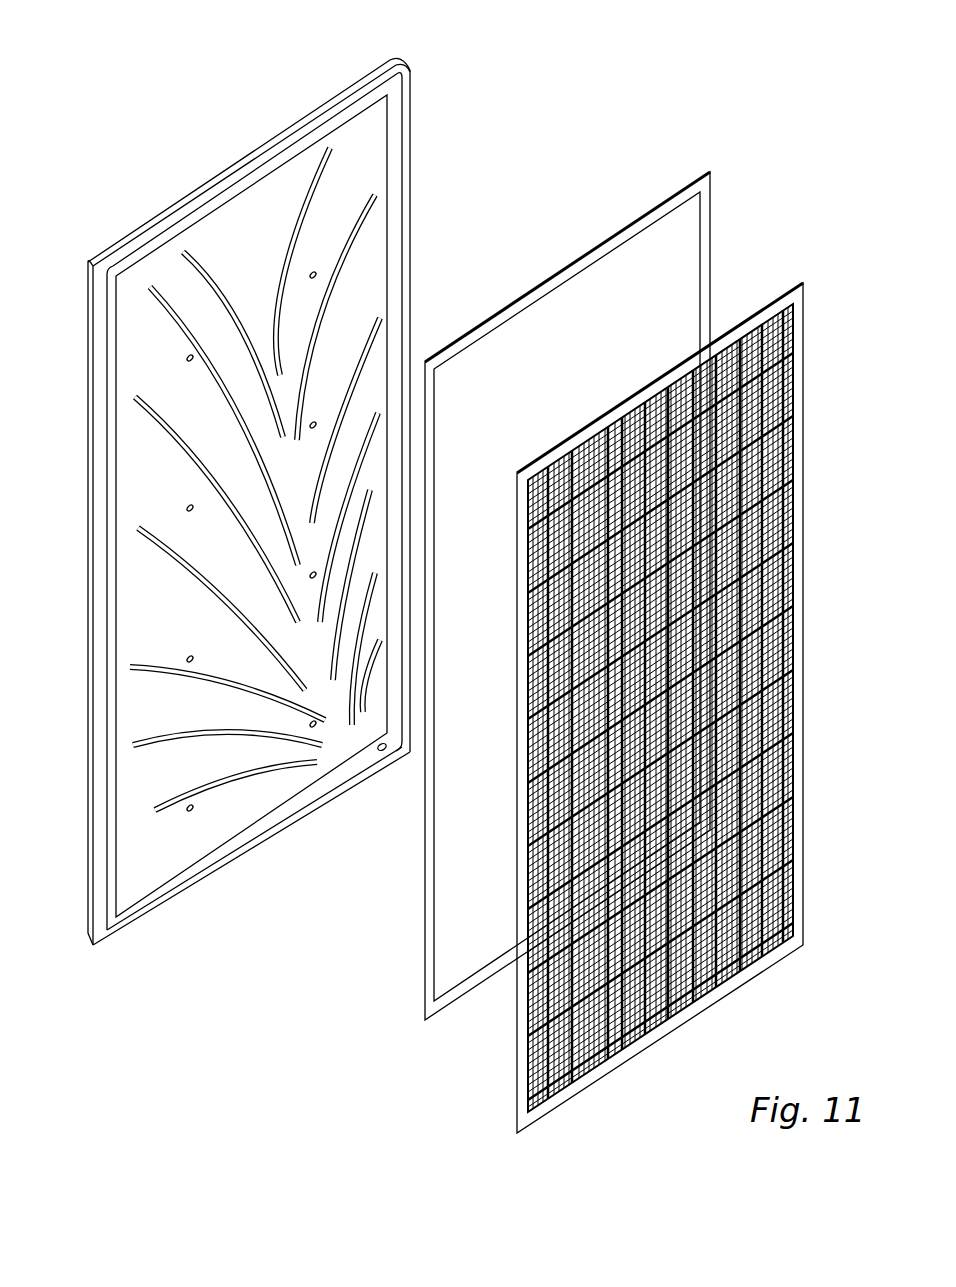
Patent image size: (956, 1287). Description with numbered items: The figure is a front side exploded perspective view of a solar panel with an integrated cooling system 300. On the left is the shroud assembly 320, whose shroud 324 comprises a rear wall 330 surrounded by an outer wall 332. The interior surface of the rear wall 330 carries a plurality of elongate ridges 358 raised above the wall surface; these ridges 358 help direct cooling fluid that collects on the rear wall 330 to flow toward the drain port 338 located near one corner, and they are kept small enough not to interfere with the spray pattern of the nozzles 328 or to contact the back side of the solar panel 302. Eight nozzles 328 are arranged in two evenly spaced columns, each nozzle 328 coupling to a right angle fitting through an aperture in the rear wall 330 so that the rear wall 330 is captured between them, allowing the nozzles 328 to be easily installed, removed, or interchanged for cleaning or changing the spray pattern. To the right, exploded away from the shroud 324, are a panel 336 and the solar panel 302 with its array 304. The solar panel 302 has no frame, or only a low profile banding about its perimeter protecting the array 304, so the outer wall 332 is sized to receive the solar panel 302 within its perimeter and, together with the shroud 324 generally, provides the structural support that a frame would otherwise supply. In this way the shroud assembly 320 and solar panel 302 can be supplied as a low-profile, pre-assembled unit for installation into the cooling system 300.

The cooling system 300 is at (530, 58).
The solar panel 302 is at (775, 303).
The array 304 is at (784, 338).
The shroud assembly 320 is at (218, 183).
The shroud 324 is at (86, 343).
The nozzles 328 is at (313, 273).
The rear wall 330 is at (147, 782).
The outer wall 332 is at (306, 822).
The filter media panel 336 is at (418, 935).
The drain port 338 is at (384, 752).
The ridges 358 is at (327, 303).